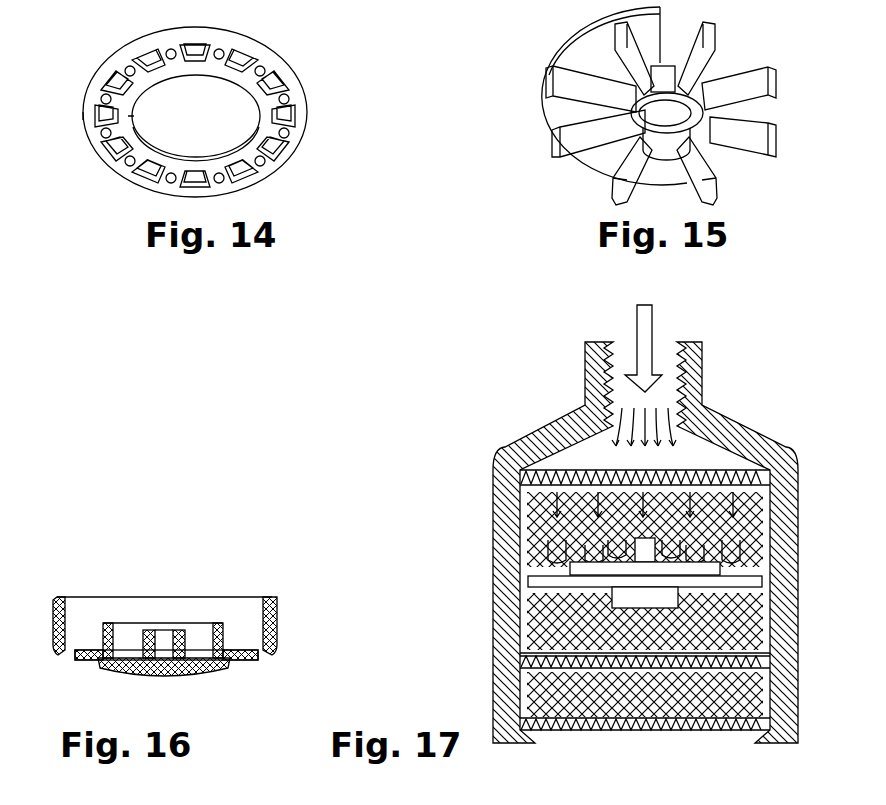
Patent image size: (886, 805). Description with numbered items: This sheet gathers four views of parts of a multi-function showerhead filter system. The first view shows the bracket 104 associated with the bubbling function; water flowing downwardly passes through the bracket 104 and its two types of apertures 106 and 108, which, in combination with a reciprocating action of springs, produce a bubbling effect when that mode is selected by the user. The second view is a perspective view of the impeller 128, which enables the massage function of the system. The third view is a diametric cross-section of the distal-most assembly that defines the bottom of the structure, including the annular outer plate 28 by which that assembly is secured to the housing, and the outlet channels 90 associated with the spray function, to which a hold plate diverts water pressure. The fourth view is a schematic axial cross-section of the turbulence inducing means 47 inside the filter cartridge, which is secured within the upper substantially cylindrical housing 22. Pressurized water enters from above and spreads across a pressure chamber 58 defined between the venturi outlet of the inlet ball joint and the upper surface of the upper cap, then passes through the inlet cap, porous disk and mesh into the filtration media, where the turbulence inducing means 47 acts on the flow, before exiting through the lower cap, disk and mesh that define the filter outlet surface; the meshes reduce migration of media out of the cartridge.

In FIG. 14, the bracket 104 is at (278, 45).
In FIG. 14, the aperture 106 is at (292, 122).
In FIG. 14, the aperture 108 is at (295, 145).
In FIG. 15, the impeller 128 is at (738, 61).
In FIG. 16, the annular outer plate 28 is at (302, 635).
In FIG. 16, the outlet channel 90 is at (77, 664).
In FIG. 17, the upper substantially cylindrical housing 22 is at (784, 510).
In FIG. 17, the pressure chamber 58 is at (570, 452).
In FIG. 17, the turbulence inducing means 47 is at (612, 598).